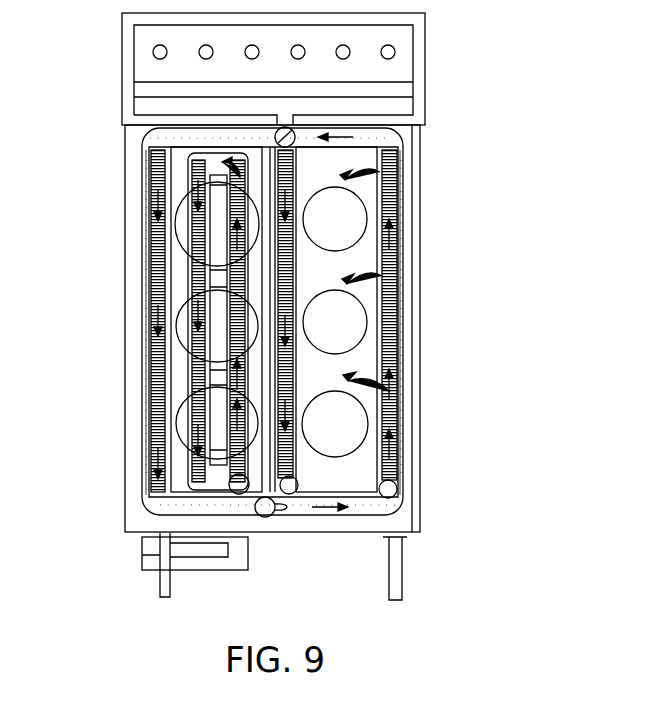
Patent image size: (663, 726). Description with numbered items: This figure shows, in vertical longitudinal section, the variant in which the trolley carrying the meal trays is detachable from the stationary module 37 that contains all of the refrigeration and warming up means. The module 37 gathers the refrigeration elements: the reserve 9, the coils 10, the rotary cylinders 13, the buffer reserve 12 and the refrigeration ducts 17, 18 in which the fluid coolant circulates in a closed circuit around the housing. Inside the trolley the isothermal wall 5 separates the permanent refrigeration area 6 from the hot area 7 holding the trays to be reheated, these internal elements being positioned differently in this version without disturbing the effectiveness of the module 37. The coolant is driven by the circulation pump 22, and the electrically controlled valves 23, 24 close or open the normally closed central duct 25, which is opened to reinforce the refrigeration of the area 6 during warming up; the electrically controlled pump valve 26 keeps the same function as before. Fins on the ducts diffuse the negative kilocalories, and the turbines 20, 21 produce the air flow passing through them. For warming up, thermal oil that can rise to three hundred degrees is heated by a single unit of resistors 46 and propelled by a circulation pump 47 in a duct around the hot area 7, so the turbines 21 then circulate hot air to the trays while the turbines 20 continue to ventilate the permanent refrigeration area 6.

The isothermal wall 5 is at (270, 377).
The permanent refrigeration area 6 is at (376, 266).
The hot area 7 is at (180, 270).
The reserve 9 is at (407, 40).
The coils 10 is at (157, 52).
The buffer reserve 12 is at (407, 107).
The rotary cylinders 13 is at (146, 88).
The refrigeration duct 17 is at (393, 152).
The refrigeration duct 18 is at (152, 146).
The turbines 20 is at (357, 320).
The ventilating turbines 21 is at (180, 235).
The circulation pump 22 is at (393, 488).
The electrically controlled valve 23 is at (293, 144).
The electrically controlled valve 24 is at (297, 488).
The central duct 25 is at (289, 291).
The electrically controlled pump valve 26 is at (288, 522).
The module 37 is at (125, 390).
The unit of resistors 46 is at (207, 560).
The circulation pump 47 is at (240, 494).